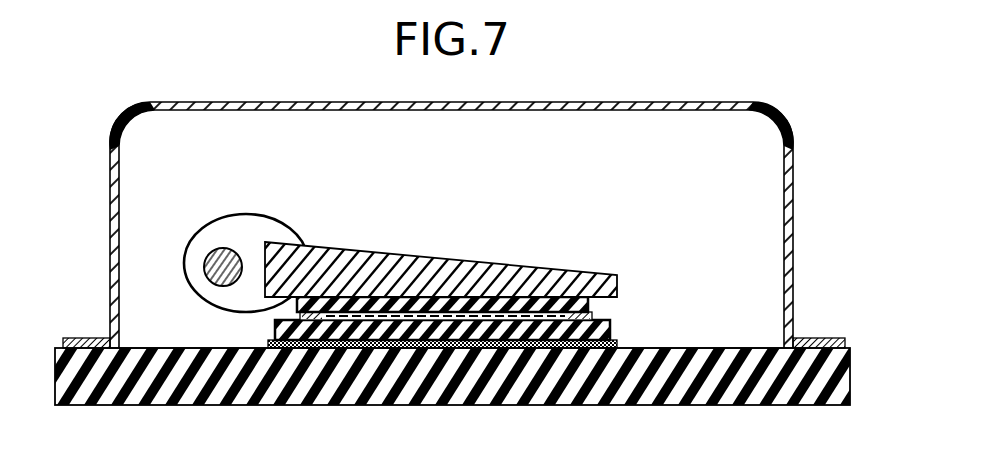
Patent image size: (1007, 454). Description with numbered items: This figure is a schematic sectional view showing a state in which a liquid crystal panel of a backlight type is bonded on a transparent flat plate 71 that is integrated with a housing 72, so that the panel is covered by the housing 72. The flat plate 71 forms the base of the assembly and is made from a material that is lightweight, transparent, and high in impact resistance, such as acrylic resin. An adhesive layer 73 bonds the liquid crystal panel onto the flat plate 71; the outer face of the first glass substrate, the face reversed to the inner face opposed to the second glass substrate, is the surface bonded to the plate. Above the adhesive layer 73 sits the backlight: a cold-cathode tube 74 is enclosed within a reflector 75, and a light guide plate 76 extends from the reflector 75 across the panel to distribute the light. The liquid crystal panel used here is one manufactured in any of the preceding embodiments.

The transparent flat plate 71 is at (851, 362).
The housing 72 is at (793, 229).
The adhesive layer 73 is at (616, 344).
The cold-cathode tube 74 is at (222, 248).
The reflector 75 is at (284, 224).
The light guide plate 76 is at (474, 262).